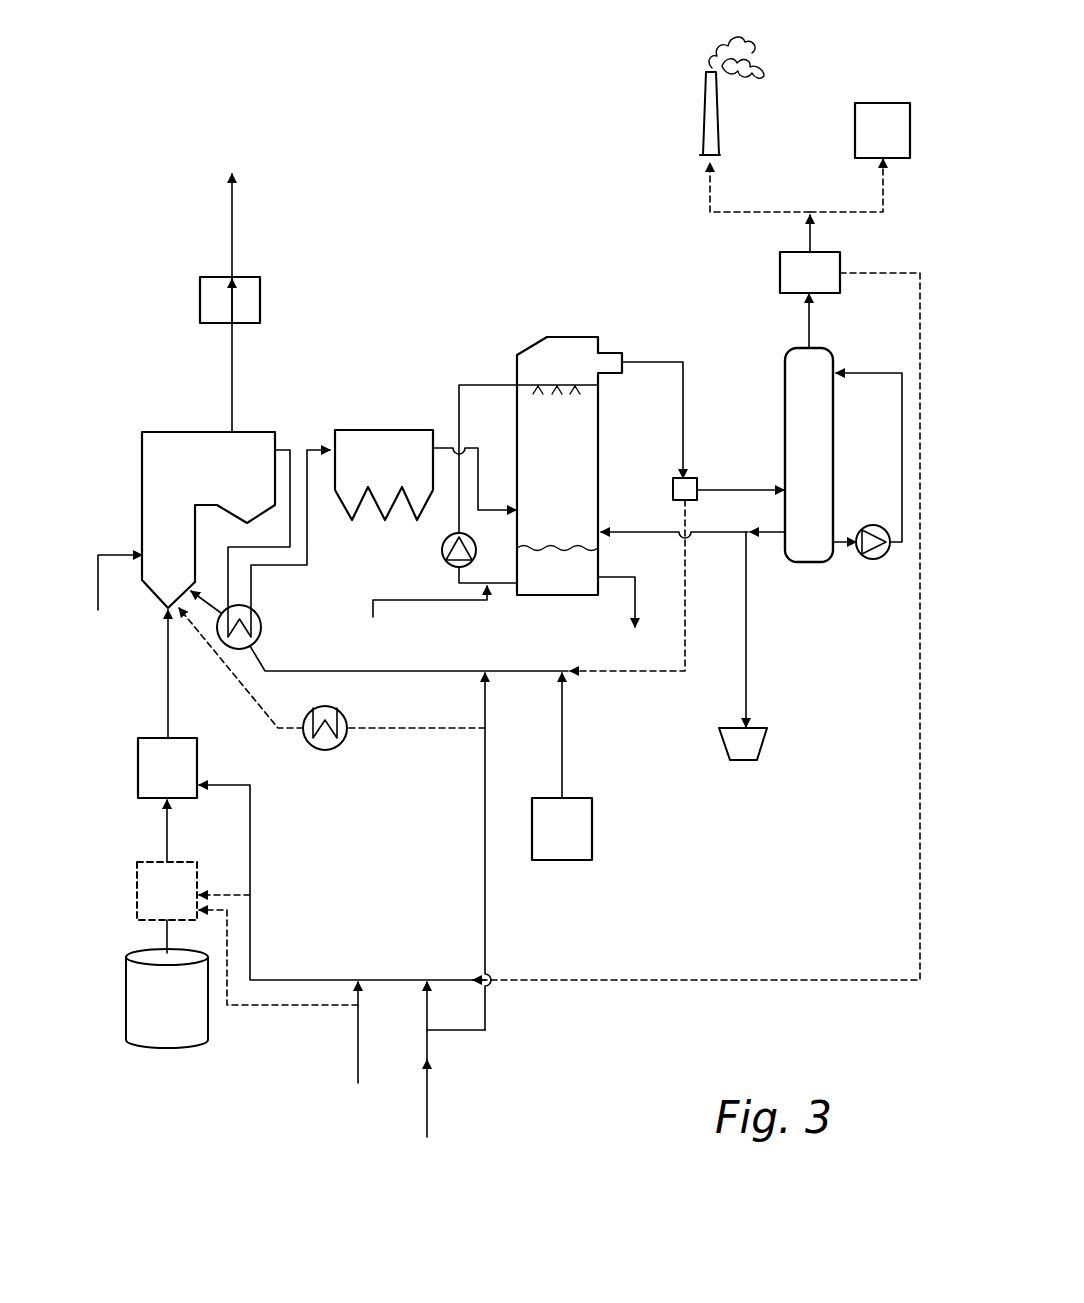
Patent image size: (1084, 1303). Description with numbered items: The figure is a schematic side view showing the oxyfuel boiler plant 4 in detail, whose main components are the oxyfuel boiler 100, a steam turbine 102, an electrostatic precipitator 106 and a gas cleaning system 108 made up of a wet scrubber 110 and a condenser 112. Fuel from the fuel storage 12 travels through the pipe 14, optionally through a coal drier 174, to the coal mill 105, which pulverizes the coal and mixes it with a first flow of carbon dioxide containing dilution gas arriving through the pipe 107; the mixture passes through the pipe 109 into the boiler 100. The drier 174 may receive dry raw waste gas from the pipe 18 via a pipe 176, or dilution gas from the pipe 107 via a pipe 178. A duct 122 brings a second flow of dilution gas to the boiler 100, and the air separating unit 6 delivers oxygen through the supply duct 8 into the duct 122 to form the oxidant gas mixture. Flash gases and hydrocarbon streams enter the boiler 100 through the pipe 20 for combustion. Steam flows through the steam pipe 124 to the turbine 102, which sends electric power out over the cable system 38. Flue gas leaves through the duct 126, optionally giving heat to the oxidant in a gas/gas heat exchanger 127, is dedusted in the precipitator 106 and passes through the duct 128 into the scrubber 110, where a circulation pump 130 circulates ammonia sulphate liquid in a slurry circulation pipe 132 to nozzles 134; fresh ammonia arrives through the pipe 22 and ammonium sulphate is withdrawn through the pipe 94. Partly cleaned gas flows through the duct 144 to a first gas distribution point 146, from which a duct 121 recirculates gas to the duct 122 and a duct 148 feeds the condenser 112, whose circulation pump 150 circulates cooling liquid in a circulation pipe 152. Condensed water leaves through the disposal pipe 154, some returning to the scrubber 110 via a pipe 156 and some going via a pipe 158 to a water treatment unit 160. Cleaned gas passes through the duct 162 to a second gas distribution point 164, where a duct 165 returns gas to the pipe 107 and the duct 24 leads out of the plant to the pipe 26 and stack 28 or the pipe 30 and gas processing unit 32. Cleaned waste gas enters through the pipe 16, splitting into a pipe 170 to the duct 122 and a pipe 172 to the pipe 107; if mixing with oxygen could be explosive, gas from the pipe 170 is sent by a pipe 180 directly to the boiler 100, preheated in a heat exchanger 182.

The oxyfuel boiler plant 4 is at (161, 160).
The air separating unit 6 is at (580, 835).
The supply duct 8 is at (565, 722).
The fuel storage 12 is at (197, 1008).
The pipe 14 is at (167, 843).
The pipe 16 is at (428, 1085).
The pipe 18 is at (357, 1060).
The pipe 20 is at (97, 582).
The pipe 22 is at (445, 602).
The duct 24 is at (813, 247).
The pipe 26 is at (735, 212).
The stack 28 is at (703, 125).
The pipe 30 is at (883, 185).
The gas processing unit 32 is at (855, 130).
The cable system 38 is at (232, 238).
The pipe 94 is at (630, 598).
The oxyfuel boiler 100 is at (178, 438).
The steam turbine 102 is at (200, 300).
The coal mill 105 is at (138, 775).
The electrostatic precipitator 106 is at (392, 428).
The pipe 107 is at (250, 862).
The gas cleaning system 108 is at (630, 263).
The pipe 109 is at (168, 725).
The wet scrubber 110 is at (543, 337).
The condenser 112 is at (785, 360).
The duct 121 is at (657, 675).
The duct 122 is at (513, 675).
The steam pipe 124 is at (232, 350).
The duct 126 is at (293, 467).
The gas/gas heat exchanger 127 is at (261, 627).
The duct 128 is at (452, 447).
The circulation pump 130 is at (441, 557).
The slurry circulation pipe 132 is at (483, 385).
The nozzles 134 is at (585, 390).
The duct 144 is at (683, 400).
The first gas distribution point 146 is at (673, 490).
The duct 148 is at (733, 488).
The circulation pump 150 is at (870, 560).
The circulation pipe 152 is at (874, 372).
The disposal pipe 154 is at (765, 537).
The pipe 156 is at (718, 536).
The pipe 158 is at (746, 668).
The water treatment unit 160 is at (755, 745).
The duct 162 is at (800, 320).
The second gas distribution point 164 is at (780, 270).
The duct 165 is at (880, 273).
The pipe 170 is at (487, 905).
The pipe 172 is at (427, 1015).
The coal drier 174 is at (137, 895).
The pipe 176 is at (311, 1007).
The pipe 178 is at (237, 897).
The pipe 180 is at (398, 732).
The heat exchanger 182 is at (323, 752).